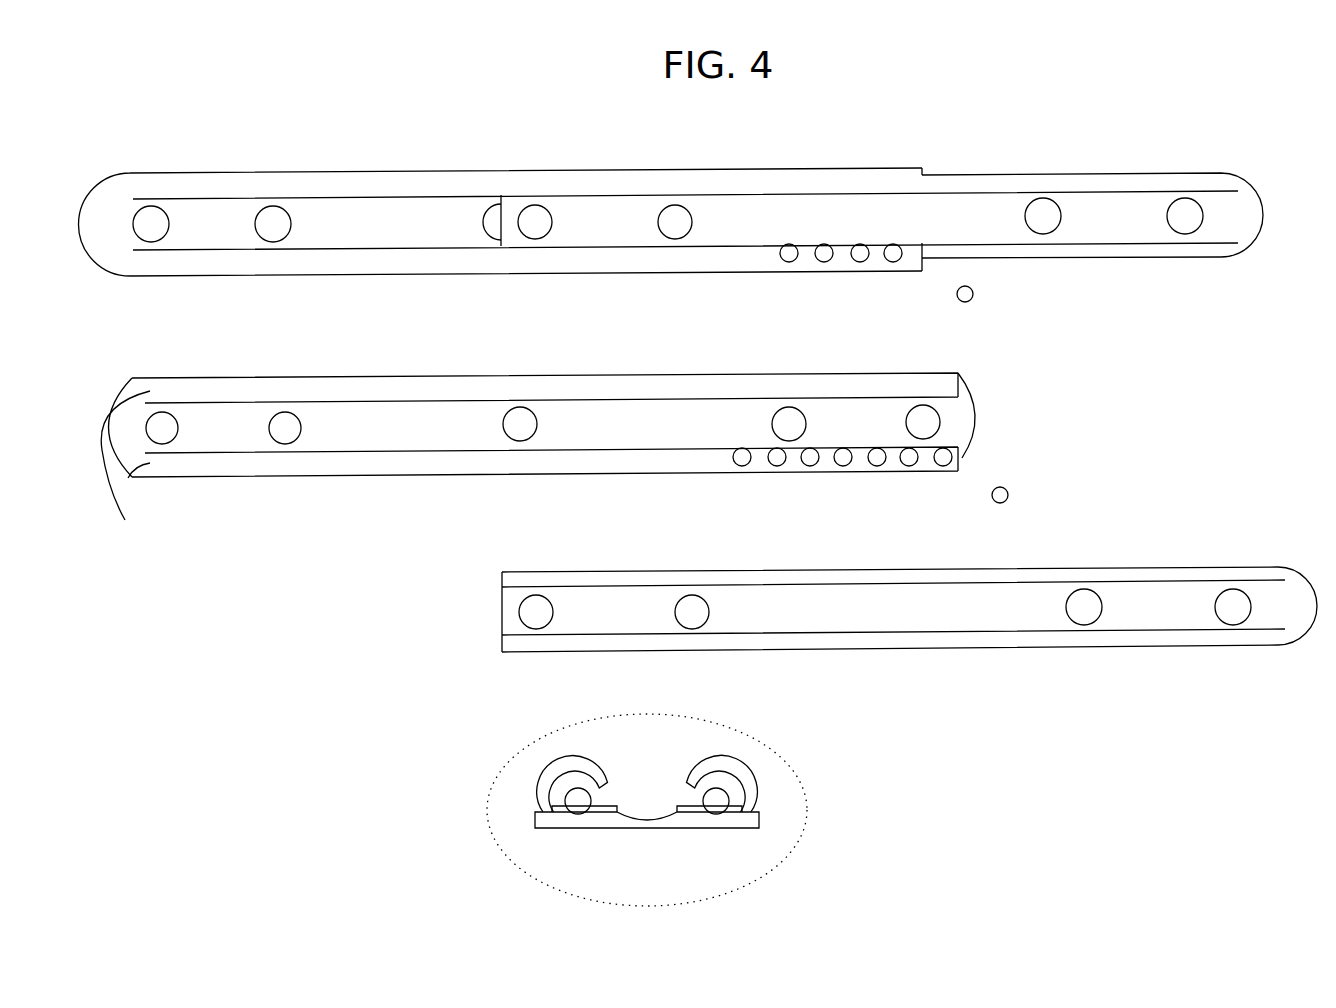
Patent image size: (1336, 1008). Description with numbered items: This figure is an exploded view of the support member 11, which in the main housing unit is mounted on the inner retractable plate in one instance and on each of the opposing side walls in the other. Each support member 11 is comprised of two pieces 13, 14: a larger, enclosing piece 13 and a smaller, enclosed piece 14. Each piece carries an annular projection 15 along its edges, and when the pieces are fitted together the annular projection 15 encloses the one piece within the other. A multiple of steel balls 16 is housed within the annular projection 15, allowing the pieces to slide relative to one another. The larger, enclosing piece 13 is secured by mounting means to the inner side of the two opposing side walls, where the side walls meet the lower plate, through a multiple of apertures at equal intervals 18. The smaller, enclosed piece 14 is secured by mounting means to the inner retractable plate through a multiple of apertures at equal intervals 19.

The support member 11 is at (659, 200).
The larger enclosing piece of the support member 13 is at (706, 225).
The smaller enclosed piece of the support member 14 is at (1111, 228).
The annular projection 15 is at (557, 804).
The steel balls 16 is at (935, 256).
The apertures at equal intervals 18 is at (148, 221).
The apertures at equal intervals 19 is at (1239, 614).